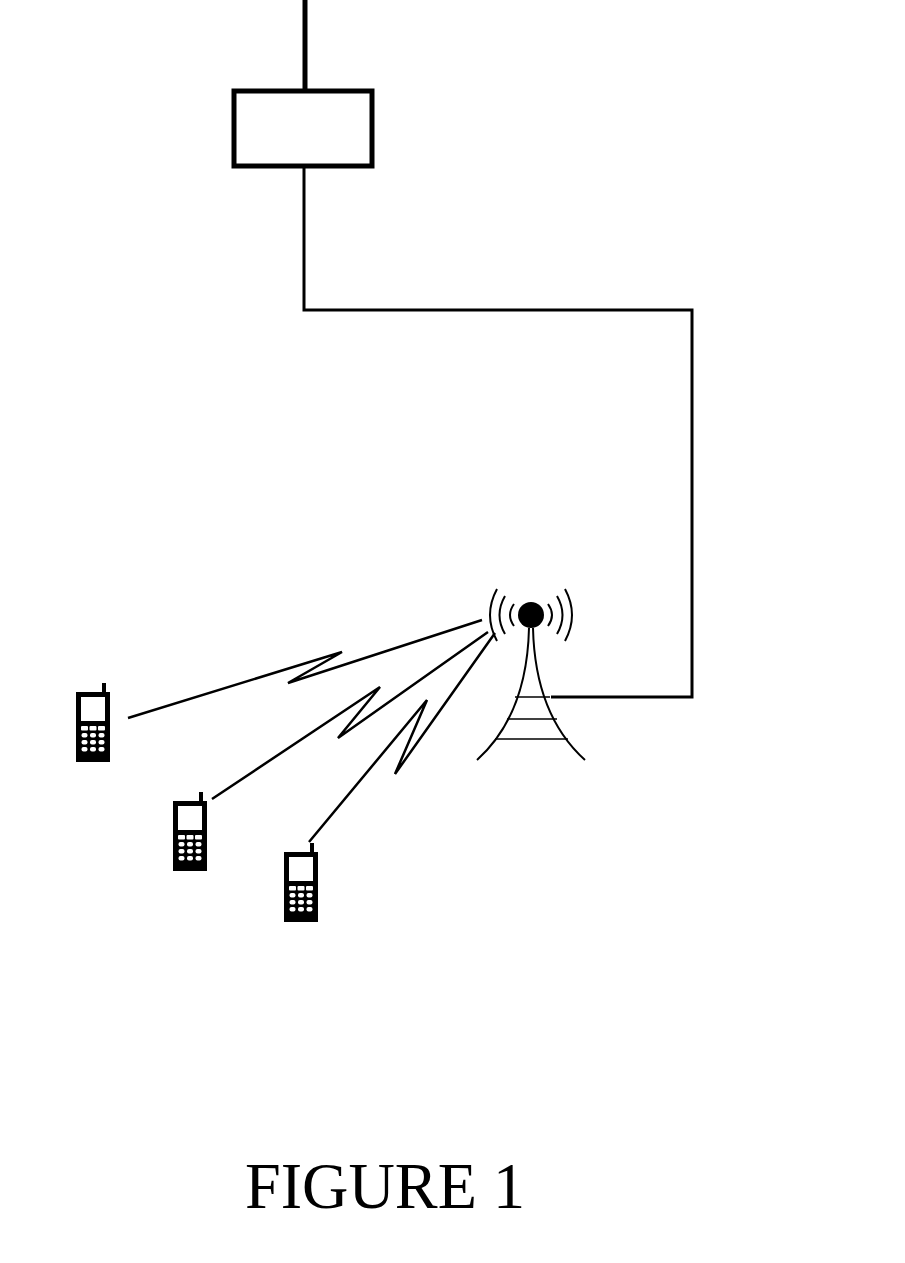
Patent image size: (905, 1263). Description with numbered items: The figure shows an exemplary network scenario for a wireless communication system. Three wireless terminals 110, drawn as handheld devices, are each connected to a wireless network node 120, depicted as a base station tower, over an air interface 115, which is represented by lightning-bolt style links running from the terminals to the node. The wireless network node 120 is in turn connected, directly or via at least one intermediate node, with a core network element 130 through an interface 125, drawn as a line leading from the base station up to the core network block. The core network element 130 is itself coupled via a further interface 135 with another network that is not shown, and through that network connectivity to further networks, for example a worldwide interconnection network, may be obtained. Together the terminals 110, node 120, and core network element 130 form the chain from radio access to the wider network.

The wireless terminal 110 is at (97, 762).
The air interface 115 is at (308, 660).
The wireless network node 120 is at (567, 732).
The interface 125 is at (692, 460).
The core network element 130 is at (331, 146).
The interface 135 is at (306, 3).